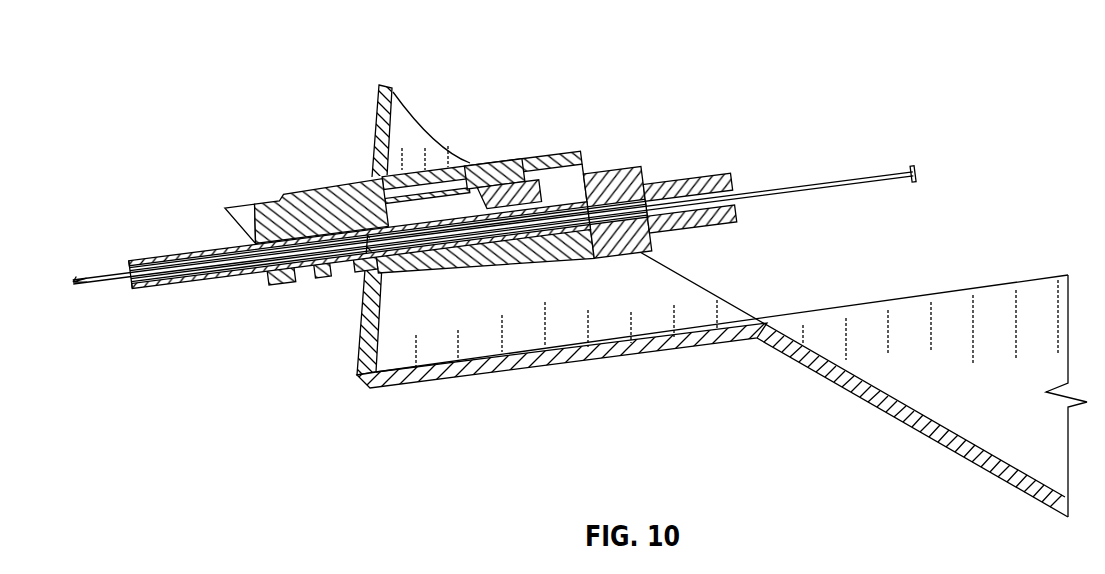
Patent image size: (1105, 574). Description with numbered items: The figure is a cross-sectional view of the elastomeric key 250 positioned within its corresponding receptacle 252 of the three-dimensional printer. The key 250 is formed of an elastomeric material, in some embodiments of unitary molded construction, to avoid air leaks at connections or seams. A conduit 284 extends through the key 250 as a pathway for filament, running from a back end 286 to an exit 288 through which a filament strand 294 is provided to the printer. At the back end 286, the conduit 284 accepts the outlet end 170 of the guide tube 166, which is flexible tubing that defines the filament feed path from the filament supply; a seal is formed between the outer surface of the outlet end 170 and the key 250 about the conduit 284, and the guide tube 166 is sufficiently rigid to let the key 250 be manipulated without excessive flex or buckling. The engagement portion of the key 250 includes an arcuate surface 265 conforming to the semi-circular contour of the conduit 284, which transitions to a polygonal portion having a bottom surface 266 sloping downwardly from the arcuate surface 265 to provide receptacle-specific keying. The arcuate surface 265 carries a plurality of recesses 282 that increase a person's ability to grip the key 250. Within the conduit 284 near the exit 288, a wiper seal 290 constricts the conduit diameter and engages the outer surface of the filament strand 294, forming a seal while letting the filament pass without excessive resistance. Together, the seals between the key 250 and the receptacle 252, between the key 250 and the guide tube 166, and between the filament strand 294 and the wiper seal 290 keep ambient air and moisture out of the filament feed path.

The guide tube 166 is at (160, 288).
The filament strand 294 is at (88, 285).
The conduit 284 is at (252, 248).
The back end 286 is at (306, 197).
The recess 282 is at (307, 283).
The arcuate surface 265 is at (347, 278).
The key 250 is at (351, 183).
The receptacle 252 is at (410, 172).
The bottom surface 266 is at (450, 172).
The outlet end 170 is at (548, 207).
The wiper seal 290 is at (627, 195).
The exit 288 is at (632, 200).